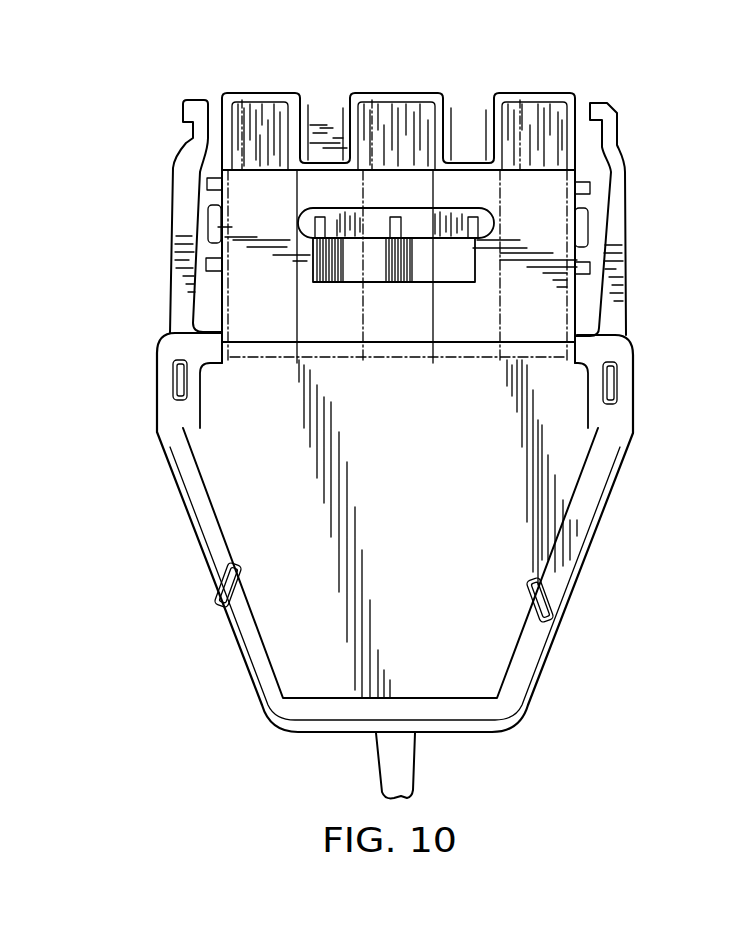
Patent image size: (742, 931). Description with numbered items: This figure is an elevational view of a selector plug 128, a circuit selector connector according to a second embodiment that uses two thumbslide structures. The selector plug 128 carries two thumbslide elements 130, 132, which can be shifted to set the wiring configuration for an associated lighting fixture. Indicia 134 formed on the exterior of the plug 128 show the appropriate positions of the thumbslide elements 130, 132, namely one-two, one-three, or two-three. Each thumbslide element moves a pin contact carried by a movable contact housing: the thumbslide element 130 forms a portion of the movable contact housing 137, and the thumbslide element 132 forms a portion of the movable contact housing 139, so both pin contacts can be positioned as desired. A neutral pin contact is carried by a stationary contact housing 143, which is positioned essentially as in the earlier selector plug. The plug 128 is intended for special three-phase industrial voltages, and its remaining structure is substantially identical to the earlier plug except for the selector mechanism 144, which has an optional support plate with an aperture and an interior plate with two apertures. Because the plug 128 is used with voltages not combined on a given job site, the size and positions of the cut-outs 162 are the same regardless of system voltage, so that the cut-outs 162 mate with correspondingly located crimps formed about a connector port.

The selector plug 128 is at (650, 367).
The thumbslide element 130 is at (323, 284).
The thumbslide element 132 is at (395, 284).
The indicia 134 is at (454, 175).
The movable contact housing 137 is at (320, 108).
The movable contact housing 139 is at (428, 337).
The contact housing 143 is at (553, 213).
The selector mechanism 144 is at (441, 340).
The cut-outs 162 is at (450, 100).